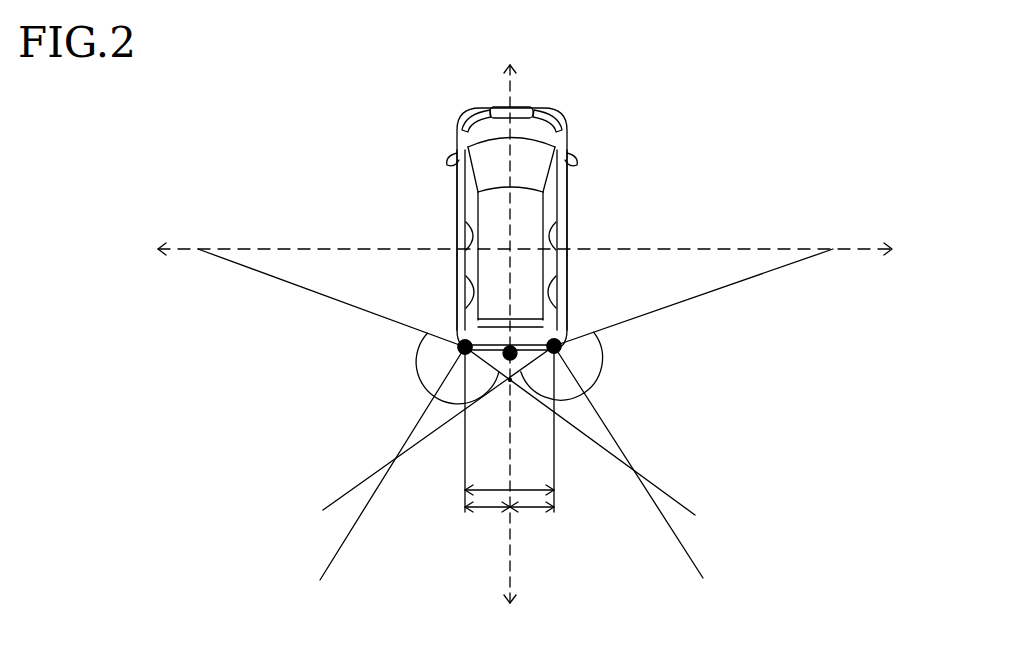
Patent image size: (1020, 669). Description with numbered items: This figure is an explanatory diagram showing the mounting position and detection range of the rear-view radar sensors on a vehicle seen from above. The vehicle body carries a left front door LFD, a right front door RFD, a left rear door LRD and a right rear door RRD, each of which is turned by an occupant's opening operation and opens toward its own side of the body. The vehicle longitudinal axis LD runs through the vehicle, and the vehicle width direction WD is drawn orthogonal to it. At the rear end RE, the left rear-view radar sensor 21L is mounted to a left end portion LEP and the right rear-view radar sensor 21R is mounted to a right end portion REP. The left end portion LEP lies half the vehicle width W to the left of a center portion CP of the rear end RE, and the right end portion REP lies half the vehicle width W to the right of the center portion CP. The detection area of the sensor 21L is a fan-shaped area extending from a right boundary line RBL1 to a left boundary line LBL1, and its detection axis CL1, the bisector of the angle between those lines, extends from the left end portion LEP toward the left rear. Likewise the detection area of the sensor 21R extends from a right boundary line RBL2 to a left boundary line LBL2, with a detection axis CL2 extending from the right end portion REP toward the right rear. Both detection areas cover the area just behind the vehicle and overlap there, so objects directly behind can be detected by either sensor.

The left front door LFD is at (457, 198).
The right front door RFD is at (567, 198).
The left rear door LRD is at (457, 268).
The right rear door RRD is at (567, 268).
The left rear-view radar sensor 21L is at (457, 328).
The right rear-view radar sensor 21R is at (567, 330).
The left end portion LEP is at (425, 347).
The right end portion REP is at (593, 360).
The center portion CP is at (507, 362).
The rear end RE is at (548, 372).
The right boundary line RBL1 is at (250, 268).
The right boundary line RBL2 is at (338, 500).
The left boundary line LBL1 is at (680, 503).
The left boundary line LBL2 is at (766, 272).
The detection axis CL1 is at (331, 563).
The detection axis CL2 is at (688, 555).
The vehicle width direction WD is at (845, 248).
The vehicle longitudinal axis LD is at (515, 580).
The vehicle width W is at (509, 429).